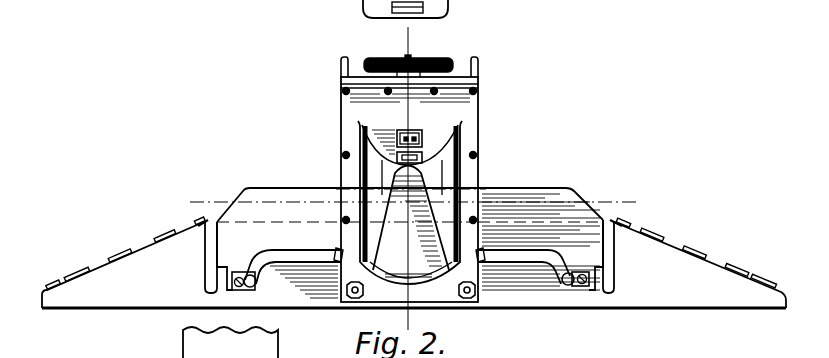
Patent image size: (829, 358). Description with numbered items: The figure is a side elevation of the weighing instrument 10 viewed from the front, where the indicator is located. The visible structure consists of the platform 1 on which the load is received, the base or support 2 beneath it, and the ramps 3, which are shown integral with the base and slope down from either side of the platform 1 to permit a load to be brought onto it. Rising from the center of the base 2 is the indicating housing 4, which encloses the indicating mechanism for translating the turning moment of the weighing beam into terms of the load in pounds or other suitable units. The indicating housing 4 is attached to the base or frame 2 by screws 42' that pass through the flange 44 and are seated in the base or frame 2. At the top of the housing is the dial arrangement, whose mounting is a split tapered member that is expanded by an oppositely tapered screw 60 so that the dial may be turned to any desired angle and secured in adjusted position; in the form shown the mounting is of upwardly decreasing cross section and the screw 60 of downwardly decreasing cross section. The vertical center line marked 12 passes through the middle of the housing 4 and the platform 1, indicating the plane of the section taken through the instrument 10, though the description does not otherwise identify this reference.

The platform 1 is at (538, 224).
The base or support 2 is at (312, 302).
The ramps 3 is at (125, 293).
The indicating housing 4 is at (478, 141).
The weighing instrument 10 is at (633, 229).
The center axis 12 is at (407, 37).
The screws 42' is at (409, 268).
The flange 44 is at (478, 295).
The oppositely tapered screw 60 is at (372, 9).